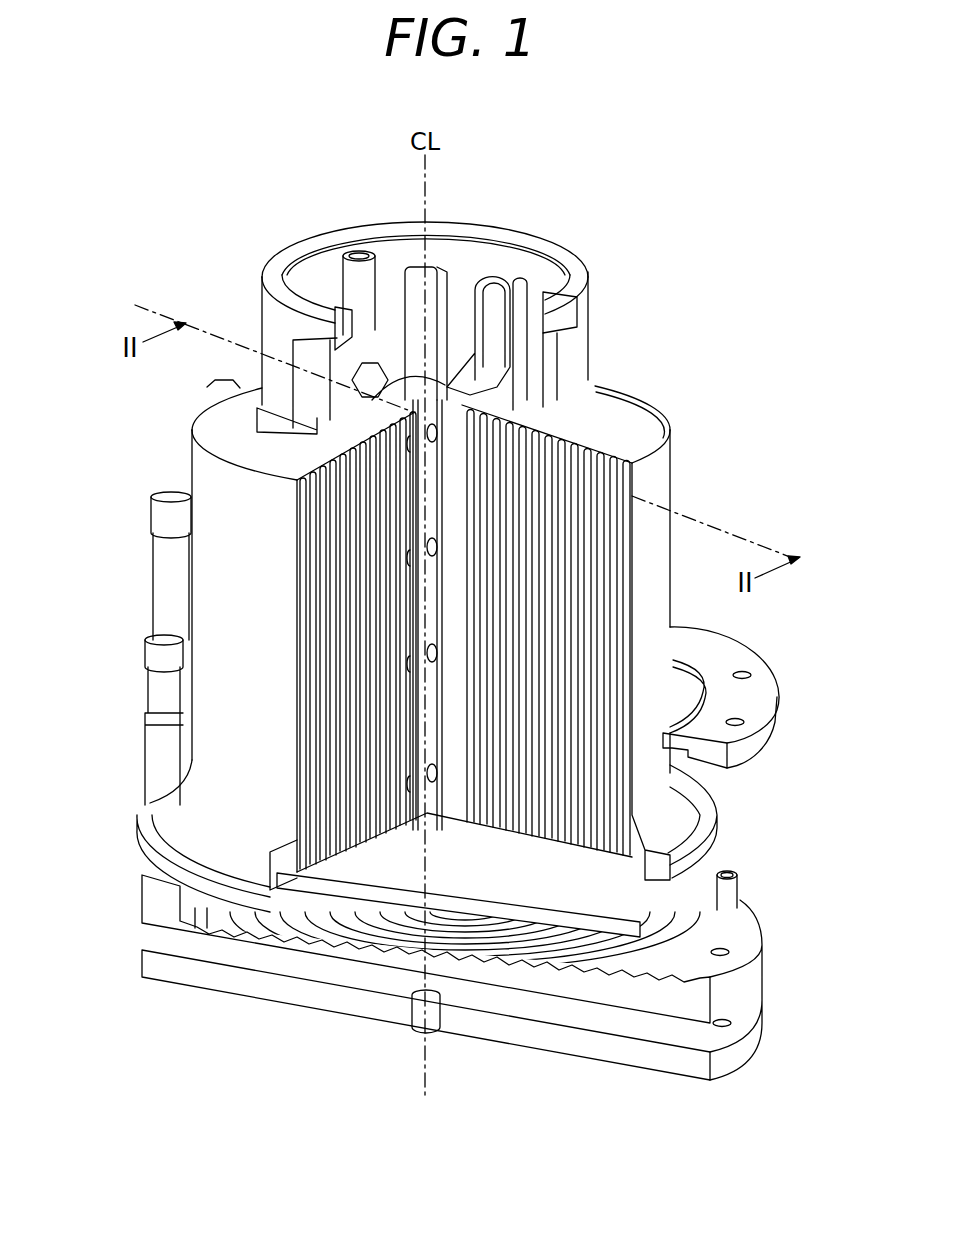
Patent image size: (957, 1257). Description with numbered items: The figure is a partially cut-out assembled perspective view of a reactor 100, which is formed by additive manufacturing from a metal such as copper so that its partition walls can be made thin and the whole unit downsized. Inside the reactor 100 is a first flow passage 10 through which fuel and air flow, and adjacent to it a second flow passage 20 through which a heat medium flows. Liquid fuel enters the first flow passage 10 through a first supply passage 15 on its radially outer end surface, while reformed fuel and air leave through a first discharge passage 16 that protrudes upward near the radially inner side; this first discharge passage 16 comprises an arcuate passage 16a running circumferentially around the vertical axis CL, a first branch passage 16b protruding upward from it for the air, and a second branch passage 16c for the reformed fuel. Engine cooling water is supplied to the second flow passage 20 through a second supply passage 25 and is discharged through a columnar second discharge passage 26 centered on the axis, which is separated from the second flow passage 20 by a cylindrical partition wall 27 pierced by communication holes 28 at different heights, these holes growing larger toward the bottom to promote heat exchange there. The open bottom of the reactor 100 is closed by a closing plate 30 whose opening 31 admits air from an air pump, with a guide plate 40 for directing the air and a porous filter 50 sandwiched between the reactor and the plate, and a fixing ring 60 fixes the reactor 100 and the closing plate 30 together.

The reactor 100 is at (644, 390).
The first flow passage 10 is at (378, 834).
The first supply passage 15 is at (150, 692).
The first discharge passage 16 is at (348, 369).
The arcuate passage 16a is at (397, 340).
The first branch passage 16b is at (520, 327).
The second branch passage 16c is at (343, 262).
The second flow passage 20 is at (370, 437).
The second supply passage 25 is at (152, 548).
The second discharge passage 26 is at (431, 266).
The cylindrical partition wall 27 is at (445, 285).
The communication holes 28 is at (440, 773).
The closing plate 30 is at (752, 1058).
The opening 31 is at (434, 1030).
The guide plate 40 is at (562, 992).
The filter 50 is at (672, 883).
The fixing ring 60 is at (780, 712).